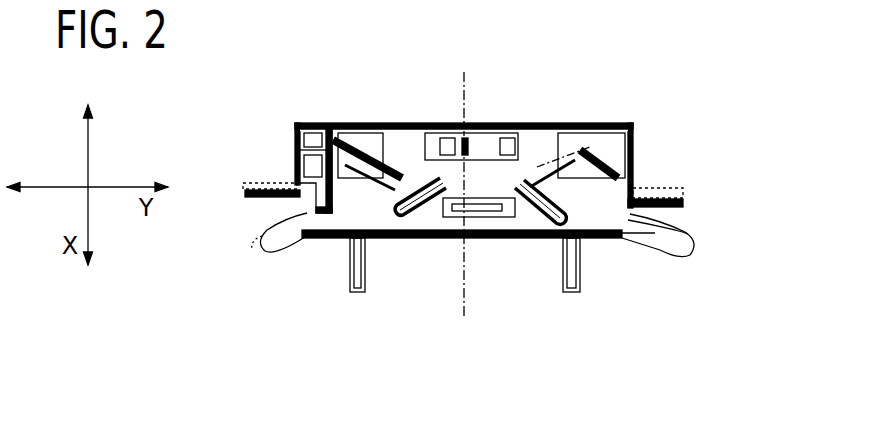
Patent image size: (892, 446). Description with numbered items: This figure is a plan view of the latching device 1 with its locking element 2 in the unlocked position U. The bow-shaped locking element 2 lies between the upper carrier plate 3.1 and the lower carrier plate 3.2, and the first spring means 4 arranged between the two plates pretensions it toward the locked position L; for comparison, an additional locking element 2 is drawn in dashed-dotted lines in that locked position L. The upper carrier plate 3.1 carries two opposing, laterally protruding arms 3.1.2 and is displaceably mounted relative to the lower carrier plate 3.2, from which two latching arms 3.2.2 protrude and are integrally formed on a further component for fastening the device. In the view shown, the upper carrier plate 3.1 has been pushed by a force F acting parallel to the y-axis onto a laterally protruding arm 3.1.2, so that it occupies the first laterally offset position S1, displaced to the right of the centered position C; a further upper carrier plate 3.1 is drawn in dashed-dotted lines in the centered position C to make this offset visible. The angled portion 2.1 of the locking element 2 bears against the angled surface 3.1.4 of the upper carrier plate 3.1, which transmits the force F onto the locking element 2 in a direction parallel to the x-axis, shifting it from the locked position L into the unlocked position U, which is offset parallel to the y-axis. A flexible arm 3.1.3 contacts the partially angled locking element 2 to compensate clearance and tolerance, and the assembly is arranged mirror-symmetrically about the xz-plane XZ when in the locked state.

The latching device 1 is at (592, 100).
The locking element 2 is at (246, 183).
The angled portion 2.1 is at (570, 167).
The upper carrier plate 3.1 is at (368, 213).
The laterally protruding arm 3.1.2 is at (265, 227).
The flexible arm 3.1.3 is at (333, 125).
The angled surface 3.1.4 is at (560, 123).
The lower carrier plate 3.2 is at (295, 124).
The latching arm 3.2.2 is at (357, 280).
The first spring means 4 is at (483, 215).
The xz-plane XZ is at (464, 72).
The locked position L is at (700, 178).
The unlocked position U is at (702, 222).
The centered position C is at (242, 266).
The first laterally offset position S1 is at (290, 267).
The force F is at (230, 244).